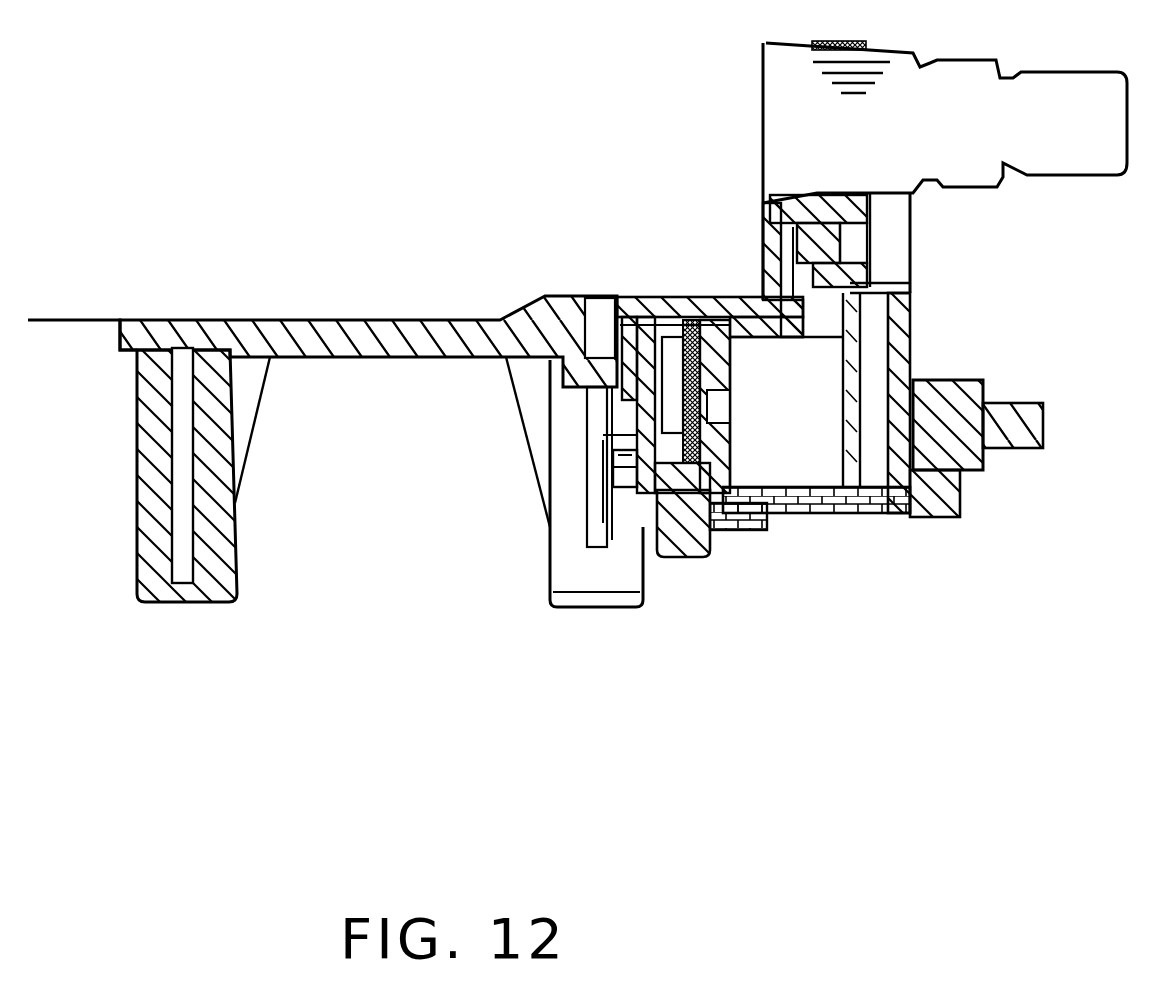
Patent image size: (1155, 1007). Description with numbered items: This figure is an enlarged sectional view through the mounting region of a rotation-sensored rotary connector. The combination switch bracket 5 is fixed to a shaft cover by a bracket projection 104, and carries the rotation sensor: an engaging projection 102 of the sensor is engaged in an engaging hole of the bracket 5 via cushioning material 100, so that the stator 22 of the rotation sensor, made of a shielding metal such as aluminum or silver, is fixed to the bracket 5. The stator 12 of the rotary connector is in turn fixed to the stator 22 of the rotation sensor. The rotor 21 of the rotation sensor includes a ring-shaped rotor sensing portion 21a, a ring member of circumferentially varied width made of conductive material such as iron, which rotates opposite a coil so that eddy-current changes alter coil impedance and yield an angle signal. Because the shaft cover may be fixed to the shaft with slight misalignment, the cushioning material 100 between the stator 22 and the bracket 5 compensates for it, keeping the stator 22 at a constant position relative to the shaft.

The bracket projection 104 is at (278, 316).
The combination switch bracket 5 is at (210, 603).
The engaging projection 102 is at (622, 472).
The cushioning material 100 is at (622, 488).
The rotor 21 is at (642, 492).
The stator 22 is at (683, 560).
The rotor sensing portion 21a is at (724, 522).
The stator 12 is at (813, 520).